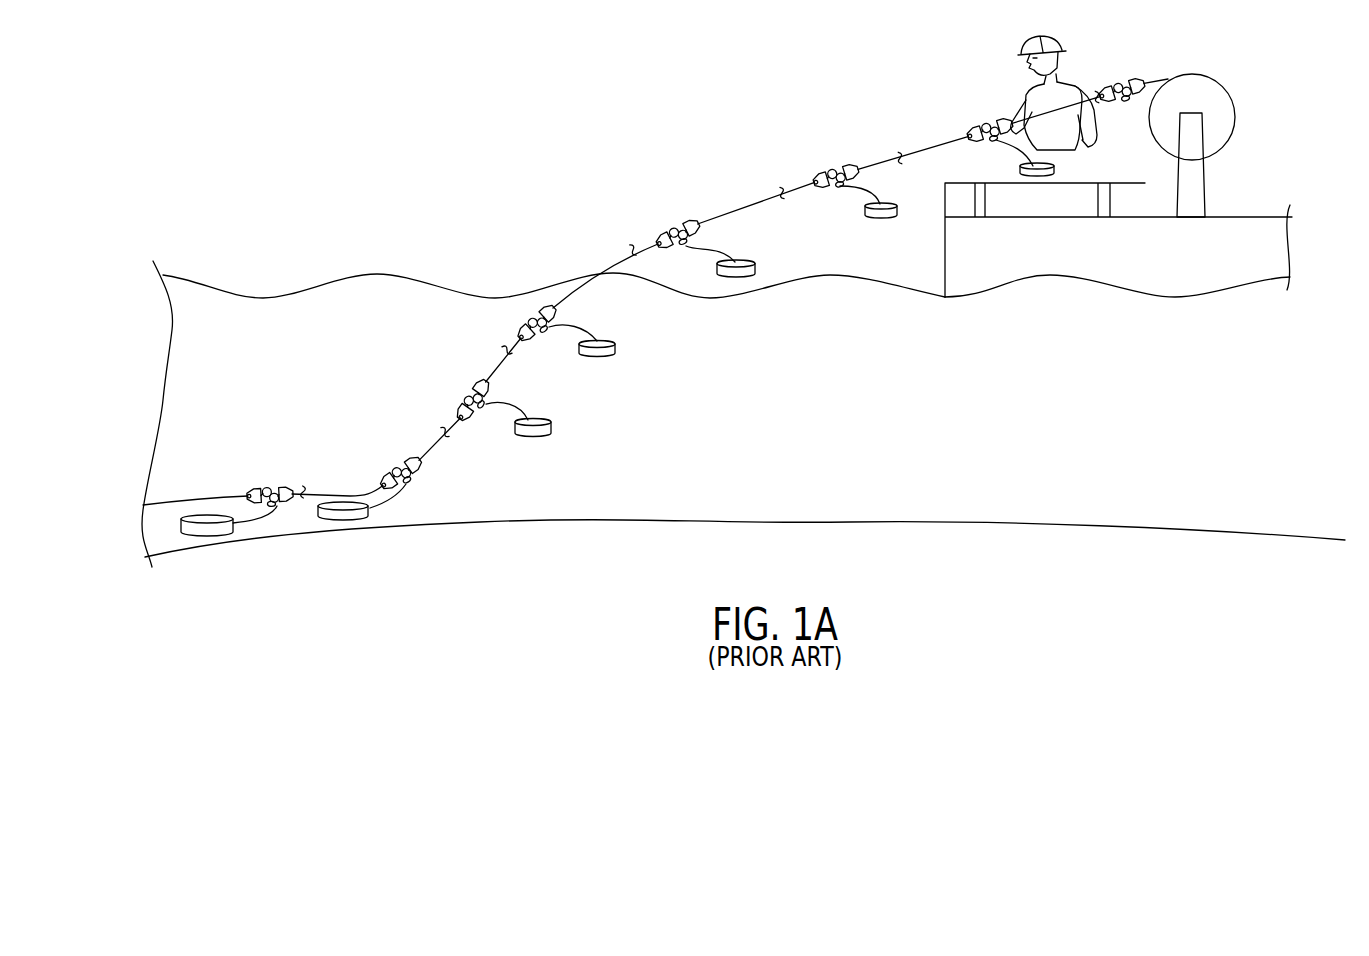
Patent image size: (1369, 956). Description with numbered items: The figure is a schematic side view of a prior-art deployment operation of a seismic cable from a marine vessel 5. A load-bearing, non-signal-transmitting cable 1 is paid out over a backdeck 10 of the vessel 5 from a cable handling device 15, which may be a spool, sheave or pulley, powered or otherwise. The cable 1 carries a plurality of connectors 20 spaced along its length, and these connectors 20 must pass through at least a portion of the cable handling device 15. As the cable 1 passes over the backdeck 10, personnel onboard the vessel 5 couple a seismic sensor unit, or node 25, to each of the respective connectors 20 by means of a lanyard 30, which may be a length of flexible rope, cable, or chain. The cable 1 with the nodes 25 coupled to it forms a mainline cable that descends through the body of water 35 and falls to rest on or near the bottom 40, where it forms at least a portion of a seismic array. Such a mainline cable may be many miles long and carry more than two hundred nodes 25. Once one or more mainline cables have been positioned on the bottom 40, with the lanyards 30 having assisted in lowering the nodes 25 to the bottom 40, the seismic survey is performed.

The cable 1 is at (1168, 78).
The vessel 5 is at (1151, 262).
The backdeck 10 is at (1266, 154).
The cable handling device 15 is at (1215, 100).
The connectors 20 is at (1128, 82).
The seismic sensor unit (node) 25 is at (1035, 176).
The lanyard 30 is at (1018, 145).
The body of water 35 is at (257, 366).
The bottom 40 is at (477, 519).